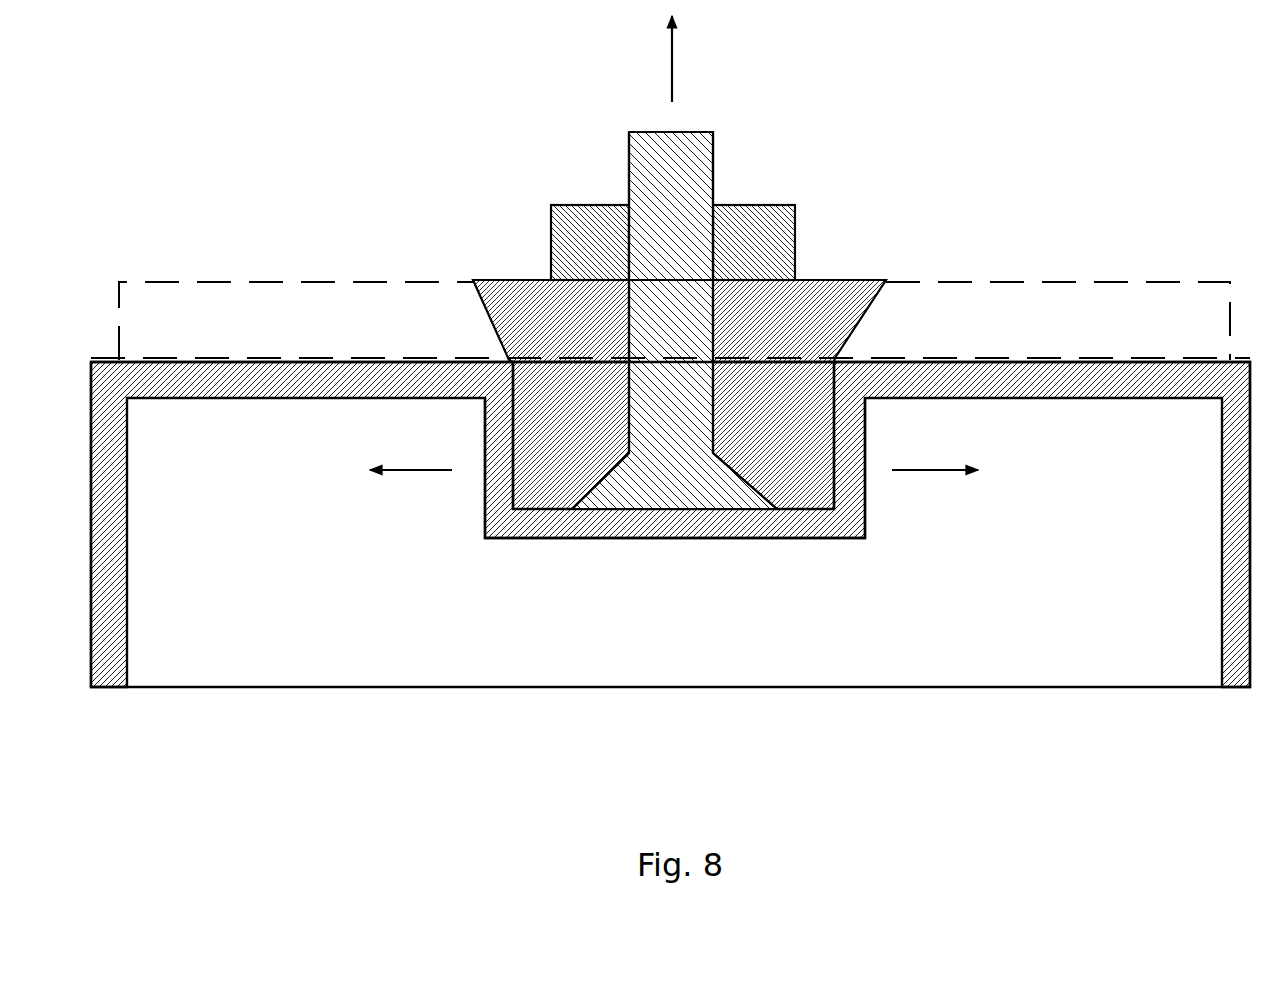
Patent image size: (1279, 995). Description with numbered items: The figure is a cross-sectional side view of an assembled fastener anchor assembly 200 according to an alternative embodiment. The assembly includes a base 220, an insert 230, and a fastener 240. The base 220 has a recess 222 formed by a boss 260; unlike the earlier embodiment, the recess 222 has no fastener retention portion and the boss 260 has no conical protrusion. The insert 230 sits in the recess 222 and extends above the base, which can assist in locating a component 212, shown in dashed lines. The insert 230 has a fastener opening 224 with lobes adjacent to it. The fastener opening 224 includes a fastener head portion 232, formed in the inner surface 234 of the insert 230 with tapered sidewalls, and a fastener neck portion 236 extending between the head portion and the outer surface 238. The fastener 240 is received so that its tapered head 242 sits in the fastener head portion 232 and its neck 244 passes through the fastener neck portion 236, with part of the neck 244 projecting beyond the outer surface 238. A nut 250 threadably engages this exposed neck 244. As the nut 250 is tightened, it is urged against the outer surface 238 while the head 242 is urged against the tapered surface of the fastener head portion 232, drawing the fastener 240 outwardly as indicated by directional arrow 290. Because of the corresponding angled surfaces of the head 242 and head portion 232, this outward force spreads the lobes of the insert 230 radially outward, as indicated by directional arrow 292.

The fastener anchor assembly 200 is at (1018, 160).
The component 212 is at (308, 280).
The base 220 is at (214, 692).
The recess 222 is at (838, 442).
The fastener opening 224 is at (633, 360).
The insert 230 is at (884, 276).
The fastener head portion 232 is at (605, 480).
The inner surface 234 is at (800, 510).
The fastener neck portion 236 is at (715, 350).
The outer surface 238 is at (837, 278).
The fastener 240 is at (717, 172).
The head 242 is at (708, 495).
The neck 244 is at (680, 257).
The nut 250 is at (579, 203).
The boss 260 is at (474, 541).
The directional arrow 290 is at (673, 62).
The directional arrow 292 is at (405, 472).